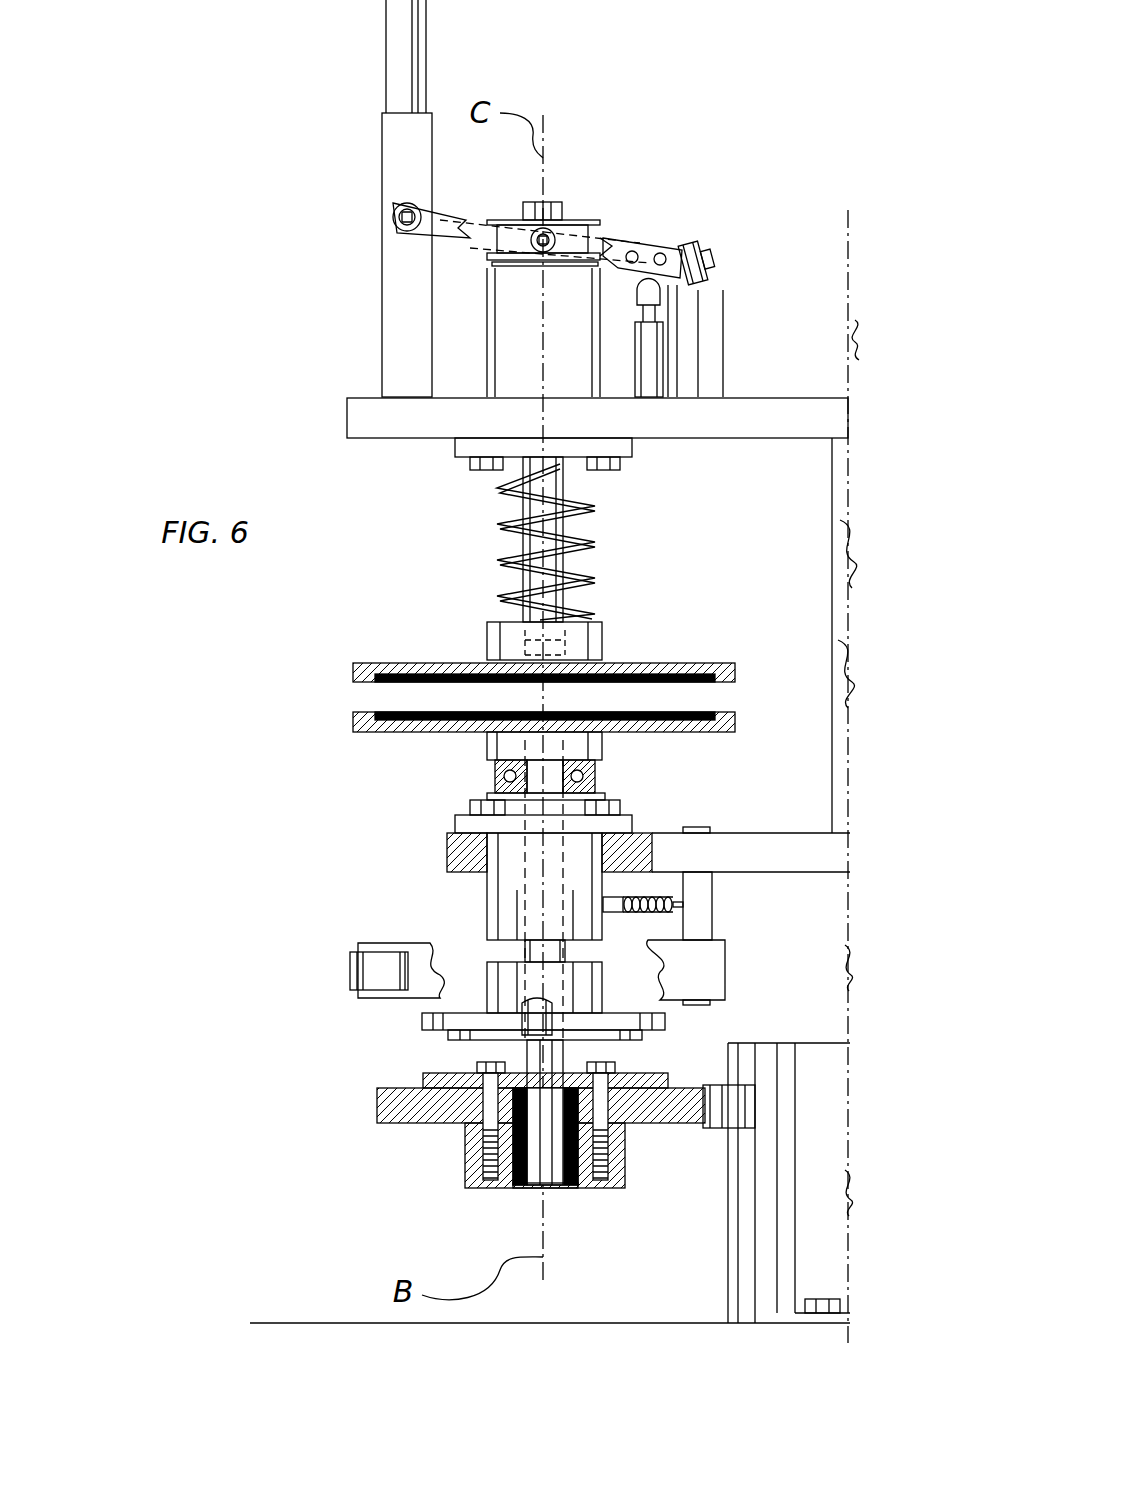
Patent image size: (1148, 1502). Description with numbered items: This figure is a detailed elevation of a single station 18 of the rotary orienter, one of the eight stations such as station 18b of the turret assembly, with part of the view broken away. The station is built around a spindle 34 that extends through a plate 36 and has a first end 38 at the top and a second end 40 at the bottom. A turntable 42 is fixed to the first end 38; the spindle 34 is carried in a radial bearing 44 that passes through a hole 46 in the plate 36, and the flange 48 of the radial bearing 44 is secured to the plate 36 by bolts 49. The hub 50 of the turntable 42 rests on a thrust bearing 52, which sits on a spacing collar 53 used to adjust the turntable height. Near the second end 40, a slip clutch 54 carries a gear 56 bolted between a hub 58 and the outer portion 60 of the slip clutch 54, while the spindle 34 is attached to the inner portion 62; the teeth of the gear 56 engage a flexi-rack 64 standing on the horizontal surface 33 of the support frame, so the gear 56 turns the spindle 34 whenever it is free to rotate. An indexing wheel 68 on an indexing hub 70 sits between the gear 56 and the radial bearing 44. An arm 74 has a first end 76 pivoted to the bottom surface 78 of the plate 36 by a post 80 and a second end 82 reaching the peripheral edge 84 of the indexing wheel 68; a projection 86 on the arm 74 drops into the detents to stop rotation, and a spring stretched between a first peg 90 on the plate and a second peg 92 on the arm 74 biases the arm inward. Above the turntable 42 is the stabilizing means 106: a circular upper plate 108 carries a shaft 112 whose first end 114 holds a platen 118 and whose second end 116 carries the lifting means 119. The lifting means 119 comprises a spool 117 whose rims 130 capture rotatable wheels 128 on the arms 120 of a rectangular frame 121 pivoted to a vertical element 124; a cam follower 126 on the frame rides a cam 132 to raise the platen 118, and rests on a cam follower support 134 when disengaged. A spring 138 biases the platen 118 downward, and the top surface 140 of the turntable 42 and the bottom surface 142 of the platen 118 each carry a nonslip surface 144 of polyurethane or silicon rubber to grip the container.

The station 18 is at (245, 308).
The station 18b is at (750, 717).
The horizontal surface 33 is at (312, 1323).
The spindle 34 is at (490, 952).
The plate 36 is at (468, 850).
The first end 38 is at (485, 750).
The second end 40 is at (570, 1188).
The turntable 42 is at (343, 722).
The radial bearing 44 is at (500, 848).
The hole 46 is at (720, 965).
The flange 48 is at (640, 830).
The bolts 49 is at (622, 807).
The hub 50 is at (604, 744).
The thrust bearing 52 is at (597, 774).
The spacing collar 53 is at (606, 797).
The slip clutch 54 is at (453, 1153).
The gear 56 is at (380, 1105).
The hub 58 is at (430, 1078).
The outer portion 60 is at (505, 1188).
The inner portion 62 is at (580, 1130).
The flexi-rack 64 is at (730, 1115).
The indexing wheel 68 is at (410, 1022).
The indexing hub 70 is at (487, 1002).
The arm 74 is at (688, 978).
The first end 76 is at (720, 968).
The bottom surface 78 is at (803, 877).
The post 80 is at (700, 918).
The second end 82 is at (350, 955).
The peripheral edge 84 is at (777, 1043).
The projection 86 is at (540, 1018).
The first peg 90 is at (673, 883).
The second peg 92 is at (610, 905).
The stabilizing means 106 is at (335, 395).
The upper plate 108 is at (347, 418).
The shaft 112 is at (556, 533).
The first end 114 is at (560, 640).
The second end 116 is at (566, 220).
The spool 117 is at (610, 218).
The platen 118 is at (343, 665).
The lifting means 119 is at (376, 80).
The arms 120 is at (444, 226).
The rectangular frame 121 is at (672, 252).
The vertical element 124 is at (392, 145).
The cam follower 126 is at (712, 265).
The rotatable wheel 128 is at (543, 242).
The rims 130 is at (672, 232).
The cam 132 is at (657, 284).
The cam follower support 134 is at (653, 345).
The spring 138 is at (490, 525).
The top surface 140 is at (400, 688).
The bottom surface 142 is at (410, 663).
The nonslip surface 144 is at (712, 708).